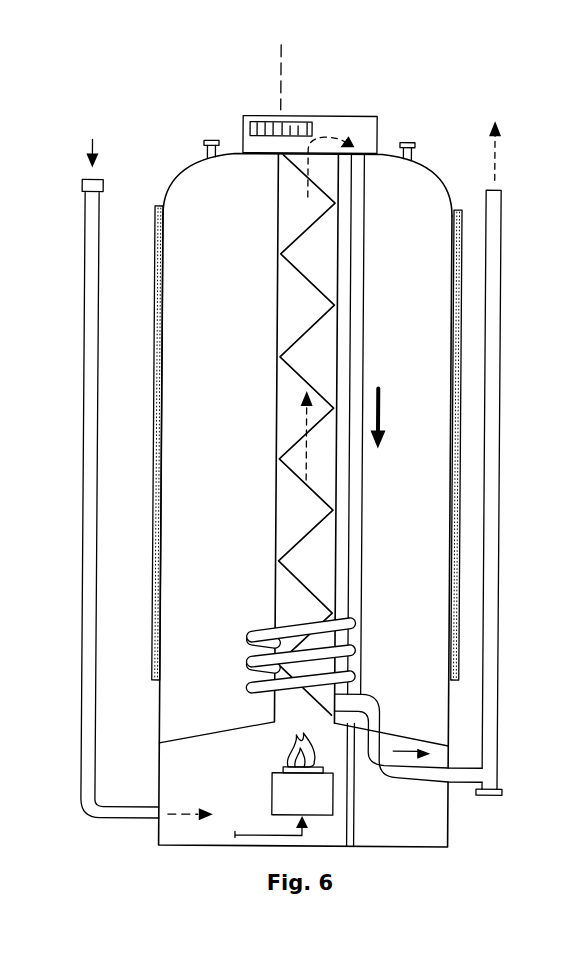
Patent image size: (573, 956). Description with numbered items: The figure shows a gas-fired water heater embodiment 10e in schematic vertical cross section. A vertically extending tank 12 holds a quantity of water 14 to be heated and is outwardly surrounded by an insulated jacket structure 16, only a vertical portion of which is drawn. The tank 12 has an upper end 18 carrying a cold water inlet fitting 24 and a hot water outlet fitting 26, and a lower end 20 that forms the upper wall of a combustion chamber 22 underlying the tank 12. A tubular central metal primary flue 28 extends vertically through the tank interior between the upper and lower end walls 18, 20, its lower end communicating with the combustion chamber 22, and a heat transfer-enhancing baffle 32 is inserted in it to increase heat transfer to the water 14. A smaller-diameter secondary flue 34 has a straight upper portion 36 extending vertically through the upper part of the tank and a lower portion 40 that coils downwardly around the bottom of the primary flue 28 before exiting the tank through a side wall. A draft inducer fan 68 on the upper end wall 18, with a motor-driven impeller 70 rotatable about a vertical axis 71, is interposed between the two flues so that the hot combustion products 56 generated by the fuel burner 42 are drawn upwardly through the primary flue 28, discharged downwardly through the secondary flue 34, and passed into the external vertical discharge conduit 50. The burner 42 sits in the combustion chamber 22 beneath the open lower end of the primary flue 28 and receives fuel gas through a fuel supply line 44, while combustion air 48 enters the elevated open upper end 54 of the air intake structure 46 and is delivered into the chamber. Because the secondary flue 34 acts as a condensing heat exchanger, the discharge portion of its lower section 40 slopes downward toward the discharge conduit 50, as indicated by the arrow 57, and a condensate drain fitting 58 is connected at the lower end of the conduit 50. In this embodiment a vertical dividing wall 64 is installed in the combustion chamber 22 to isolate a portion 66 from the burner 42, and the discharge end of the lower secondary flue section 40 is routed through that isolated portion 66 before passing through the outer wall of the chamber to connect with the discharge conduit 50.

The water heater embodiment 10e is at (286, 457).
The tank 12 is at (157, 715).
The water 14 is at (230, 554).
The insulated jacket structure 16 is at (156, 516).
The upper end 18 is at (189, 164).
The lower end 20 is at (200, 741).
The combustion chamber 22 is at (245, 760).
The cold water inlet fitting 24 is at (202, 151).
The hot water outlet fitting 26 is at (404, 142).
The primary flue 28 is at (272, 298).
The heat transfer-enhancing baffle 32 is at (306, 223).
The secondary flue 34 is at (367, 544).
The upper portion of the secondary flue 36 is at (363, 309).
The lower portion of the secondary flue 40 is at (249, 661).
The fuel burner 42 is at (292, 804).
The fuel supply line 44 is at (264, 832).
The air intake structure 46 is at (127, 821).
The combustion air 48 is at (88, 131).
The discharge conduit 50 is at (500, 452).
The open upper end 54 is at (80, 187).
The combustion products 56 is at (327, 136).
The arrow 57 is at (404, 744).
The condensate drain fitting 58 is at (492, 795).
The vertical dividing wall 64 is at (359, 808).
The isolated combustion chamber portion 66 is at (400, 803).
The draft inducer fan 68 is at (357, 116).
The motor-driven impeller 70 is at (260, 127).
The vertical axis 71 is at (276, 78).